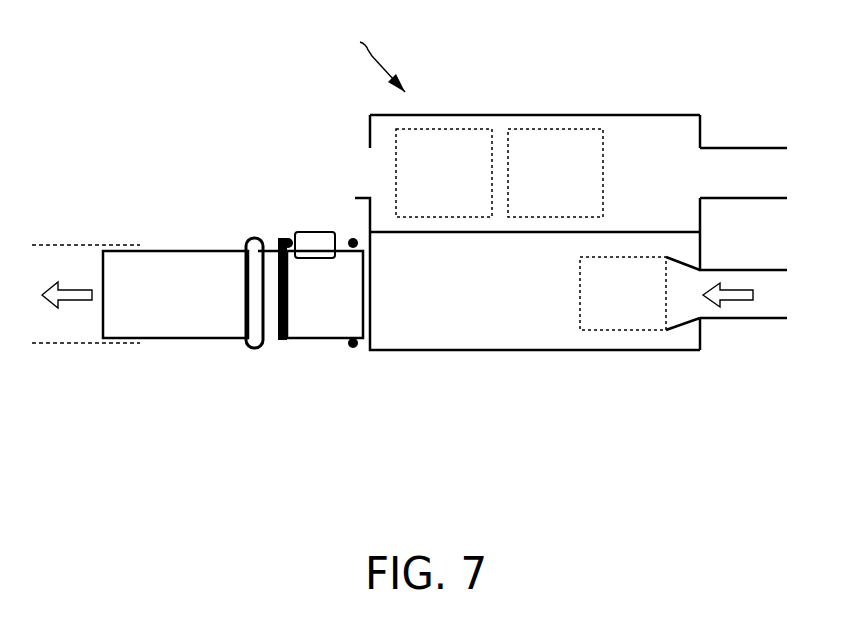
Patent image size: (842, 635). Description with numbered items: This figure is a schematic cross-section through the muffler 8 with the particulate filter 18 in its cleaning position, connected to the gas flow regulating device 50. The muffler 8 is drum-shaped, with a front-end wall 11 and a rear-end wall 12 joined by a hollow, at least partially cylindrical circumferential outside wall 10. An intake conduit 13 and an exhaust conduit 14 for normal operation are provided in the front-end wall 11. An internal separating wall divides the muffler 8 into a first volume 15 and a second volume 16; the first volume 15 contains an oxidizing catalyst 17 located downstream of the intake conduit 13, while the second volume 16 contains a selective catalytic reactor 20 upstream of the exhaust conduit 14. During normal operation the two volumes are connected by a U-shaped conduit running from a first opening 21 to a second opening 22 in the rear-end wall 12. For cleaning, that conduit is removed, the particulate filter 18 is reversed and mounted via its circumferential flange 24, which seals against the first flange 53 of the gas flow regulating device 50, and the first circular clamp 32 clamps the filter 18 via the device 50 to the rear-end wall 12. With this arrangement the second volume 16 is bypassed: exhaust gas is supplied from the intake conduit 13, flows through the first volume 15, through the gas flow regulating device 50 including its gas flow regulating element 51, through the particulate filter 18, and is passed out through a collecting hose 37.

The muffler 8 is at (373, 61).
The circumferential outside wall 10 is at (594, 115).
The front-end wall 11 is at (704, 128).
The rear-end wall 12 is at (368, 130).
The intake conduit 13 is at (767, 303).
The exhaust conduit 14 is at (768, 163).
The first volume 15 is at (560, 317).
The second volume 16 is at (645, 175).
The oxidizing catalyst 17 is at (640, 293).
The particulate filter 18 is at (145, 294).
The selective catalytic reactor 20 is at (499, 173).
The first opening 21 is at (372, 340).
The second opening 22 is at (362, 148).
The circumferential flange 24 is at (247, 241).
The first circular clamp 32 is at (352, 345).
The collecting hose 37 is at (60, 345).
The gas flow regulating device 50 is at (320, 342).
The gas flow regulating element 51 is at (282, 342).
The first flange 53 is at (283, 238).